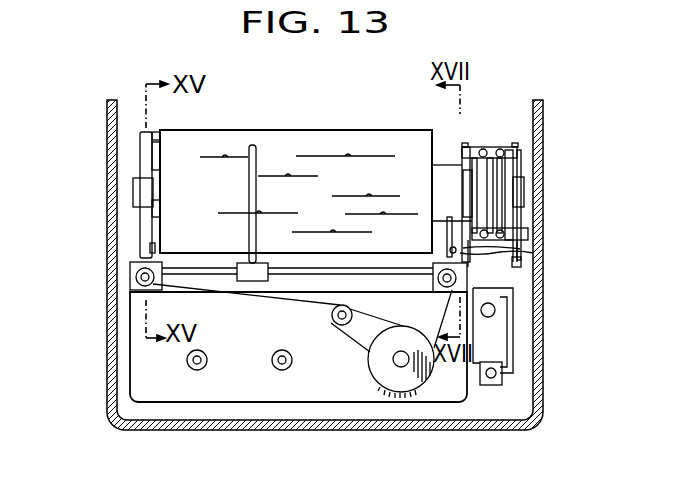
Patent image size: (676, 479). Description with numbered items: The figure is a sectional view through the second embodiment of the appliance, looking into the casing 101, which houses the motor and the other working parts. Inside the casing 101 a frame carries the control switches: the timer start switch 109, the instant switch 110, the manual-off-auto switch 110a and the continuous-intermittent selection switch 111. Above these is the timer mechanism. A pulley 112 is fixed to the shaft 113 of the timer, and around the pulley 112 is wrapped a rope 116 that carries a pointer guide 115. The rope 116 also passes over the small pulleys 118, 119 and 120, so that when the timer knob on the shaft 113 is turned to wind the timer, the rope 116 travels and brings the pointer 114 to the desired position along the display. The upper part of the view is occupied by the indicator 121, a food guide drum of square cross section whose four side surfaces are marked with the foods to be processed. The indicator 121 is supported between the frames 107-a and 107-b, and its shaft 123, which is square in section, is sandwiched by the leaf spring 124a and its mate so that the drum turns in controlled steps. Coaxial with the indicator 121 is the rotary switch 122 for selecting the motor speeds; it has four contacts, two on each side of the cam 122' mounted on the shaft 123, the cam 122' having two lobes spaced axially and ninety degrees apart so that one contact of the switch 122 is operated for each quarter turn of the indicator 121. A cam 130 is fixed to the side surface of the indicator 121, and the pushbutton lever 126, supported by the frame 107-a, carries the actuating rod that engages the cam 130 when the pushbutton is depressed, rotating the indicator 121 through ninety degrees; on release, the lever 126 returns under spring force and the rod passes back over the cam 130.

The casing 101 is at (540, 400).
The frame 107-a is at (521, 258).
The frame 107-b is at (140, 218).
The timer start switch 109 is at (496, 312).
The instant switch 110 is at (207, 362).
The manual-off-auto switch 110a is at (197, 370).
The continuous-intermittent selection switch 111 is at (283, 370).
The pulley 112 is at (370, 364).
The shaft 113 is at (398, 364).
The pointer 114 is at (249, 145).
The pointer guide 115 is at (243, 281).
The rope 116 is at (443, 318).
The small pulley 118 is at (468, 266).
The small pulley 119 is at (135, 277).
The small pulley 120 is at (334, 318).
The indicator 121 is at (322, 140).
The rotary switch 122 is at (496, 183).
The cam 122' is at (558, 205).
The shaft 123 is at (133, 190).
The leaf spring 124a is at (143, 140).
The pushbutton lever 126 is at (470, 255).
The cam 130 is at (445, 175).